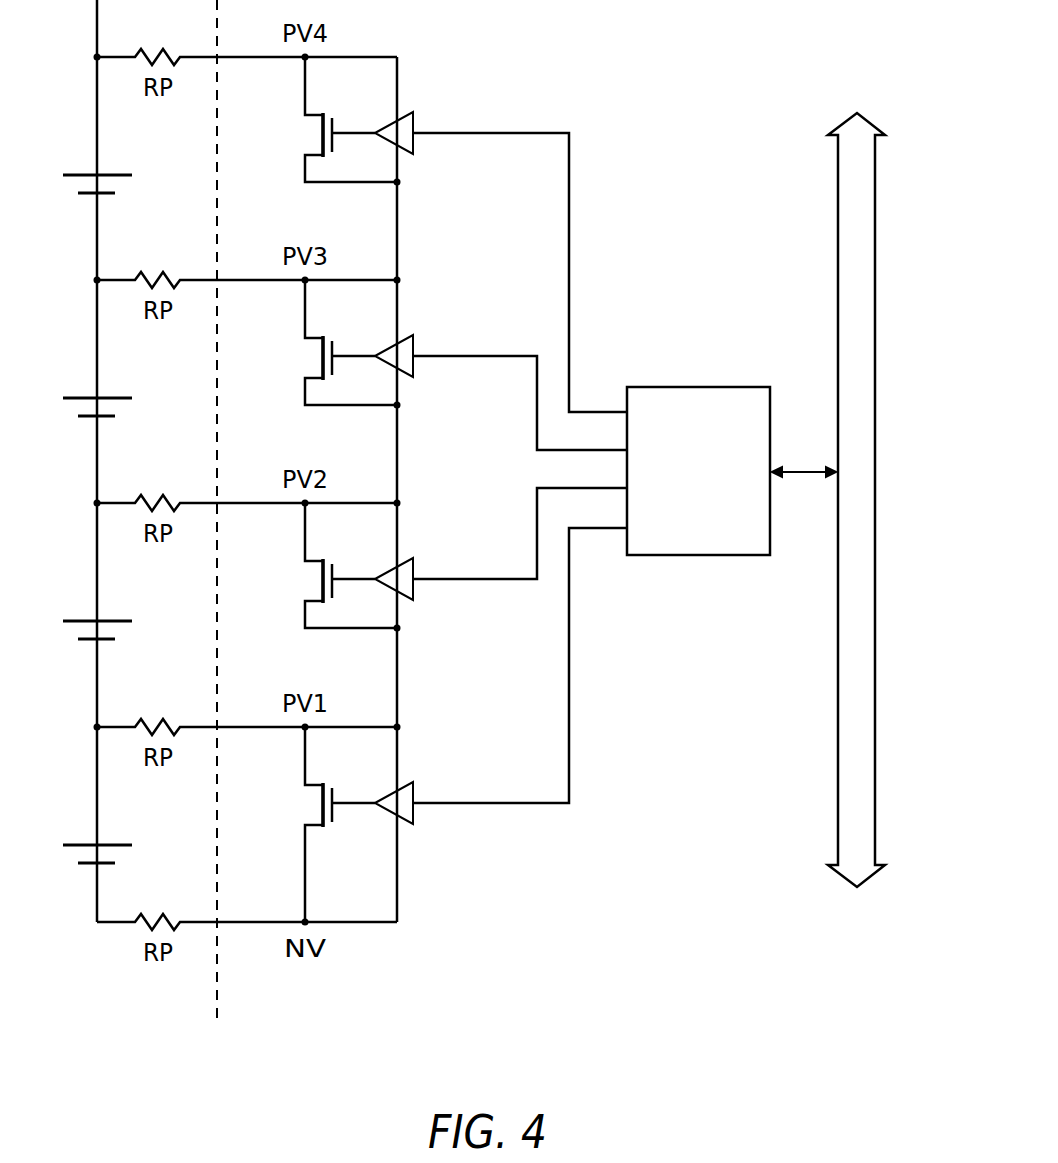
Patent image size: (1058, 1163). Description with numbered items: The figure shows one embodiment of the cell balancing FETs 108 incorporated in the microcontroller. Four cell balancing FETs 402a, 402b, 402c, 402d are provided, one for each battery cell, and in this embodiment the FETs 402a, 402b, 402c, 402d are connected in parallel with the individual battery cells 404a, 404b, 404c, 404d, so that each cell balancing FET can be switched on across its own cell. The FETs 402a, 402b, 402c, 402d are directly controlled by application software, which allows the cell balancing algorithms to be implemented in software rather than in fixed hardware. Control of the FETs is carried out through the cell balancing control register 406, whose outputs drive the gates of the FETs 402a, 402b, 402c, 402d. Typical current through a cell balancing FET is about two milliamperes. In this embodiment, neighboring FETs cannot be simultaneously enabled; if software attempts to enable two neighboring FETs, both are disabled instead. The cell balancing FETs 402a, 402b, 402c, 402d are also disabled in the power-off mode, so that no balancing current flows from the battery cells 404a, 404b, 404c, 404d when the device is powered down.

The cell balancing FETs 108 is at (478, 1030).
The cell balancing FET 402a is at (313, 110).
The cell balancing FET 402b is at (313, 333).
The cell balancing FET 402c is at (313, 556).
The cell balancing FET 402d is at (313, 780).
The battery cell 404a is at (136, 175).
The battery cell 404b is at (136, 398).
The battery cell 404c is at (136, 621).
The battery cell 404d is at (136, 845).
The cell balancing control register 406 is at (692, 556).